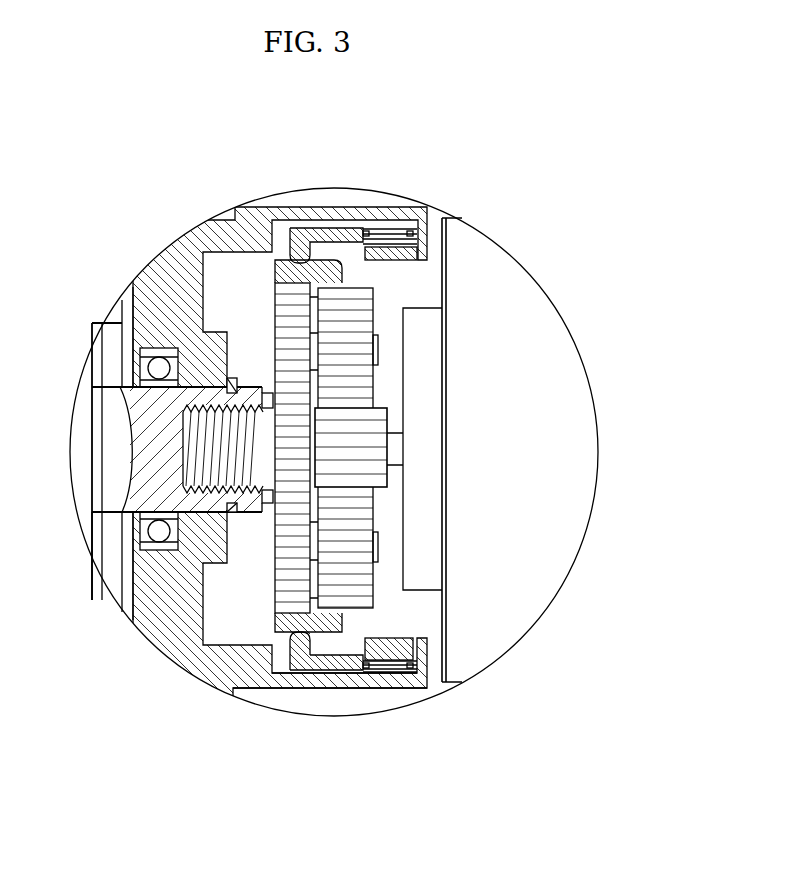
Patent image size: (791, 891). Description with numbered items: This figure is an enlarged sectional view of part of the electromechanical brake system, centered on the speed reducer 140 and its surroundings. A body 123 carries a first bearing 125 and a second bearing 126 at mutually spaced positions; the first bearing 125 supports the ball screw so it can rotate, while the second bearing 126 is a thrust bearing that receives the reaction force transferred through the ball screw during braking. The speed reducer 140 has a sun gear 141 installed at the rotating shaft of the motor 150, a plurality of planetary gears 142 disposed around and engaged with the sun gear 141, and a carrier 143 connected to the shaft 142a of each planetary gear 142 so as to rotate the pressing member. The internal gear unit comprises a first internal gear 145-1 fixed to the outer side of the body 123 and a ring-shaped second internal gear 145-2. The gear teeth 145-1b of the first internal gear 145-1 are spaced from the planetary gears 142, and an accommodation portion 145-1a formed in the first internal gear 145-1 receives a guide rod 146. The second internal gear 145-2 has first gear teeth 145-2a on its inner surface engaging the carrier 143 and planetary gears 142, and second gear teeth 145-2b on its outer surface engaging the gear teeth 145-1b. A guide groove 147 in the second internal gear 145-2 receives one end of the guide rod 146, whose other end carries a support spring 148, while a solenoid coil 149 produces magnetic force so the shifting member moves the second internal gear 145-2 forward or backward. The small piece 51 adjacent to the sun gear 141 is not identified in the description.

The body 123 is at (177, 252).
The first bearing 125 is at (153, 353).
The second bearing 126 is at (110, 347).
The carrier 143 is at (262, 410).
The guide groove 147 is at (302, 235).
The guide rod 146 is at (333, 232).
The support spring 148 is at (387, 232).
The solenoid coil 149 is at (410, 212).
The speed reducer 140 is at (400, 297).
The planetary gears 142 is at (367, 318).
The shaft of planetary gear 142a is at (380, 348).
The sun gear 141 is at (380, 422).
The shaft 51 is at (393, 450).
The motor 150 is at (512, 610).
The gear teeth of first internal gear 145-1b is at (410, 626).
The first internal gear 145-1 is at (405, 686).
The accommodation portion 145-1a is at (385, 680).
The first gear teeth 145-2a is at (237, 690).
The second gear teeth 145-2b is at (329, 650).
The second internal gear 145-2 is at (275, 648).